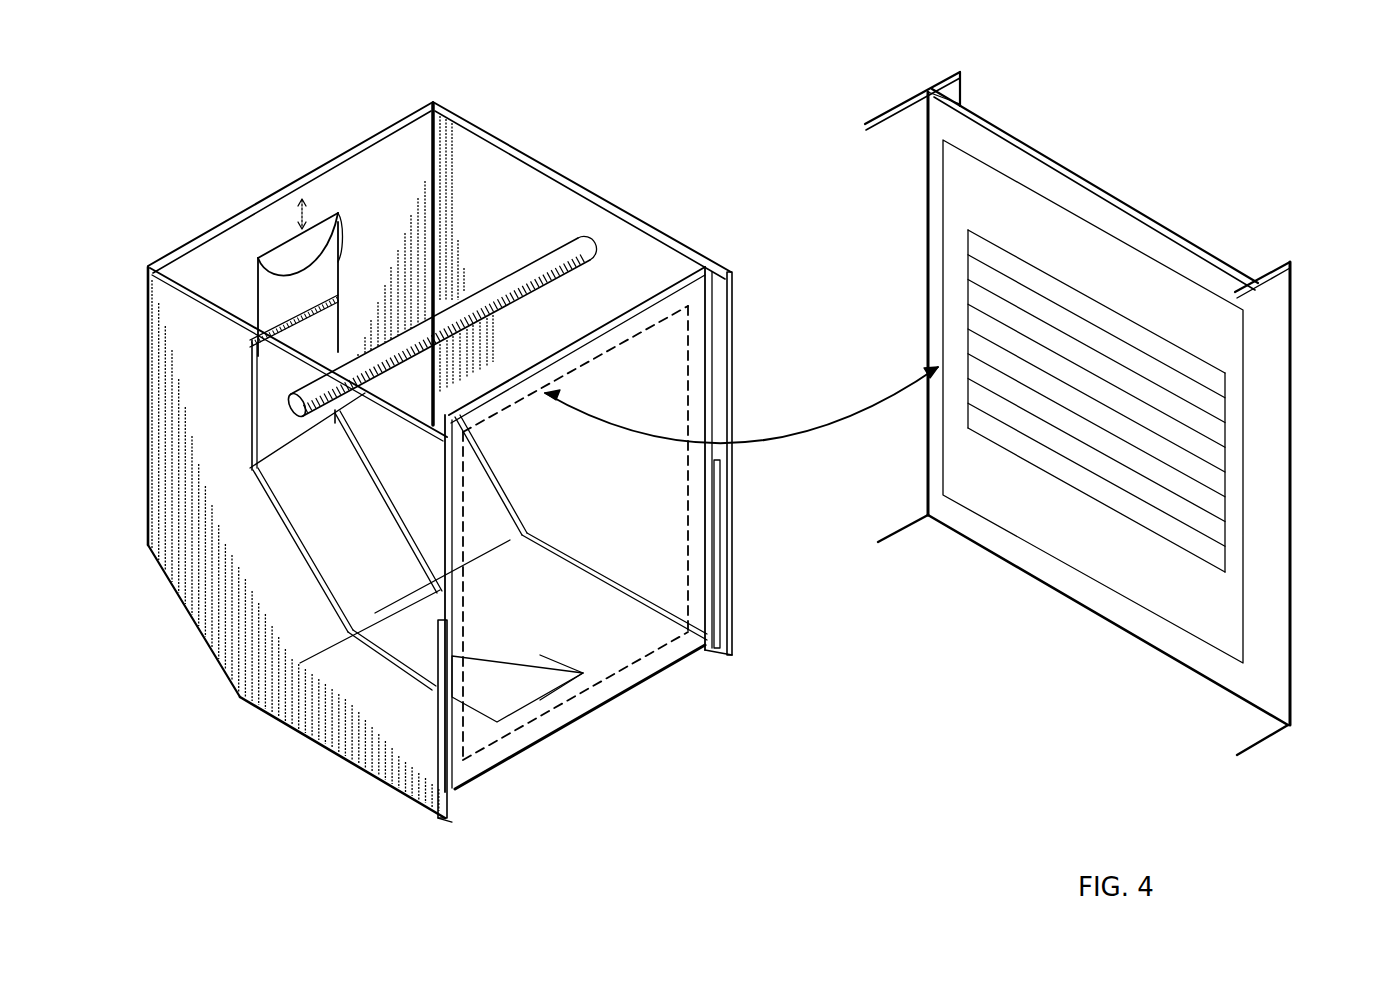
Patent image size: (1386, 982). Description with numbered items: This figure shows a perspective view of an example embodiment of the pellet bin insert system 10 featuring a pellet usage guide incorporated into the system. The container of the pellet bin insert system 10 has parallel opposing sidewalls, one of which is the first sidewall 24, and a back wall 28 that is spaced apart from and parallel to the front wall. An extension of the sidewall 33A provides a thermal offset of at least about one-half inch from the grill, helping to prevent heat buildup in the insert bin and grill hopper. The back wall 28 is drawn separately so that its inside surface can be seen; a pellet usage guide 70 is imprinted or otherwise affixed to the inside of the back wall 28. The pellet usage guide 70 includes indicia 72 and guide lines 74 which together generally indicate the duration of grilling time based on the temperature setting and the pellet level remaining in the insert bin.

The pellet bin insert system 10 is at (440, 462).
The first sidewall 24 is at (913, 88).
The back wall 28 is at (1120, 422).
The sidewall extension 33A is at (958, 85).
The pellet usage guide 70 is at (1070, 549).
The indicia 72 is at (1220, 410).
The guide lines 74 is at (1195, 530).